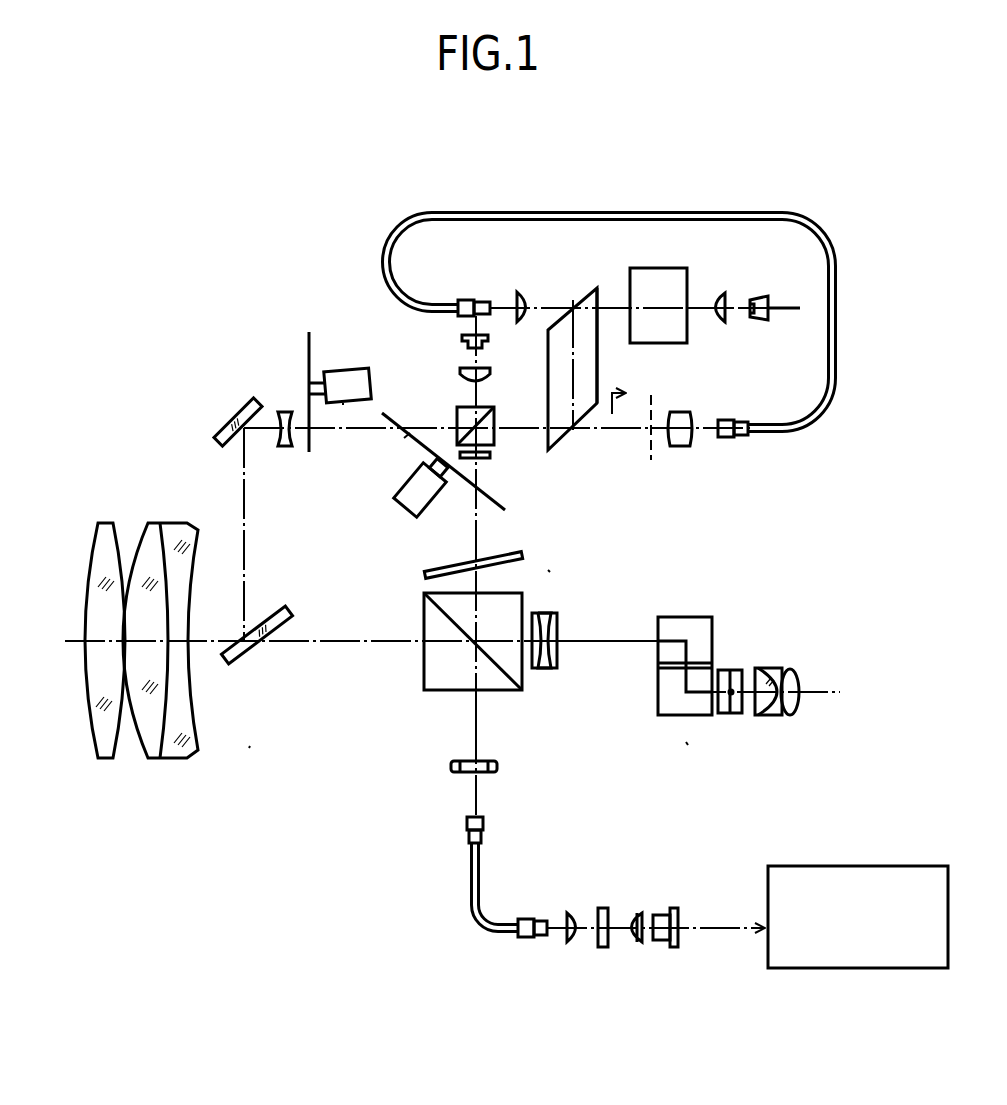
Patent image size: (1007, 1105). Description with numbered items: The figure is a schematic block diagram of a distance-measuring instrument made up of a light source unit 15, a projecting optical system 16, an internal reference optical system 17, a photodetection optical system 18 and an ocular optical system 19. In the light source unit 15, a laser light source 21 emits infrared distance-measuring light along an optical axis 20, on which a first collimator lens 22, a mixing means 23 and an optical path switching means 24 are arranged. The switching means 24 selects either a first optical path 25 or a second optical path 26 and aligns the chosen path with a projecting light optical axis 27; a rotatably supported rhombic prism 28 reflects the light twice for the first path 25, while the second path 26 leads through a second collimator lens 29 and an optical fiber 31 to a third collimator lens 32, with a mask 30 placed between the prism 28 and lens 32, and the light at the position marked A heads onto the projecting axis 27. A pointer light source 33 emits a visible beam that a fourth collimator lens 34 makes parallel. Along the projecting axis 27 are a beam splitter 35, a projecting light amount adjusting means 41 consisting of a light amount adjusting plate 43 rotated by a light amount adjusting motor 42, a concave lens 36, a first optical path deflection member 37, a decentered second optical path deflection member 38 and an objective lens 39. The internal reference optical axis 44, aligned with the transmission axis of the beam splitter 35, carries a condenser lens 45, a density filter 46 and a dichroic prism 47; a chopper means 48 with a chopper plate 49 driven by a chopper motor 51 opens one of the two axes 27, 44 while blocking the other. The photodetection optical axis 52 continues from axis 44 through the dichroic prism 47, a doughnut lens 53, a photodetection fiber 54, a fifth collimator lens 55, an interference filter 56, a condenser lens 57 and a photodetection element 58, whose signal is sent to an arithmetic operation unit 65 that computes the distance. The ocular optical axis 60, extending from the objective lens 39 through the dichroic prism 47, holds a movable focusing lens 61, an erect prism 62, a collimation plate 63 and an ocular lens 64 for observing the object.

The light source unit 15 is at (835, 280).
The projecting optical system 16 is at (210, 804).
The internal reference optical system 17 is at (619, 547).
The photodetection optical system 18 is at (553, 933).
The ocular optical system 19 is at (708, 789).
The optical axis 20 is at (727, 236).
The laser light source 21 is at (811, 252).
The first collimator lens 22 is at (750, 233).
The mixing means 23 is at (659, 243).
The optical path switching means 24 is at (550, 369).
The first optical path 25 is at (664, 411).
The second optical path 26 is at (554, 272).
The projecting light optical axis 27 is at (440, 562).
The rhombic prism 28 is at (599, 281).
The second collimator lens 29 is at (495, 282).
The mask 30 is at (702, 405).
The optical fiber 31 is at (609, 284).
The third collimator lens 32 is at (741, 455).
The pointer light source 33 is at (414, 321).
The fourth collimator lens 34 is at (434, 356).
The beam splitter 35 is at (497, 415).
The concave lens 36 is at (235, 371).
The first optical path deflection member 37 is at (208, 395).
The second optical path deflection member 38 is at (267, 663).
The objective lens 39 is at (141, 685).
The projecting light amount adjusting means 41 is at (336, 329).
The light amount adjusting motor 42 is at (380, 398).
The light amount adjusting plate 43 is at (279, 367).
The internal reference optical axis 44 is at (413, 559).
The condenser lens 45 is at (512, 473).
The density filter 46 is at (425, 586).
The dichroic prism 47 is at (422, 673).
The chopper means 48 is at (480, 478).
The chopper plate 49 is at (385, 458).
The chopper motor 51 is at (402, 492).
The photodetection optical axis 52 is at (543, 739).
The doughnut lens 53 is at (426, 784).
The photodetection fiber 54 is at (453, 877).
The fifth collimator lens 55 is at (561, 894).
The interference filter 56 is at (570, 964).
The condenser lens 57 is at (634, 894).
The photodetection element 58 is at (674, 964).
The ocular optical axis 60 is at (607, 598).
The focusing lens 61 is at (563, 671).
The erect prism 62 is at (731, 637).
The collimation plate 63 is at (746, 721).
The ocular lens 64 is at (812, 650).
The arithmetic operation unit 65 is at (858, 950).
The light beam A is at (629, 396).